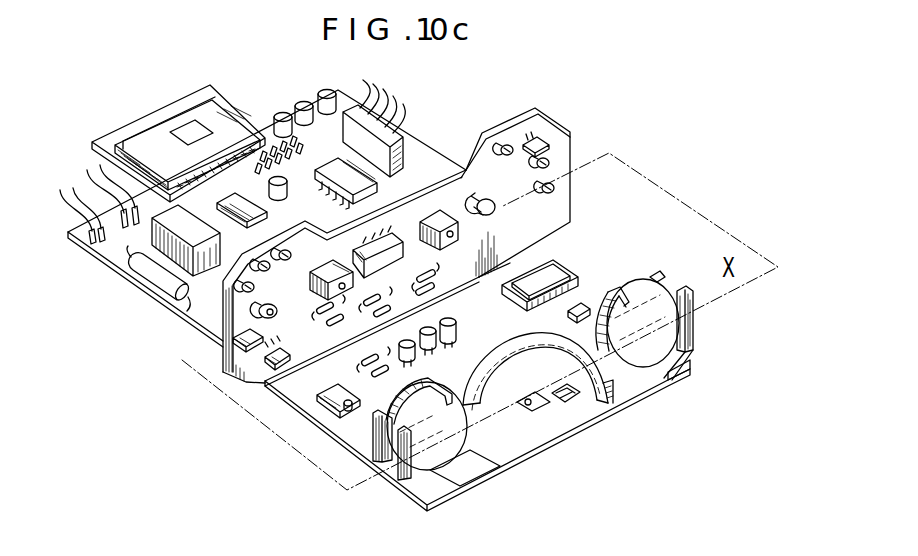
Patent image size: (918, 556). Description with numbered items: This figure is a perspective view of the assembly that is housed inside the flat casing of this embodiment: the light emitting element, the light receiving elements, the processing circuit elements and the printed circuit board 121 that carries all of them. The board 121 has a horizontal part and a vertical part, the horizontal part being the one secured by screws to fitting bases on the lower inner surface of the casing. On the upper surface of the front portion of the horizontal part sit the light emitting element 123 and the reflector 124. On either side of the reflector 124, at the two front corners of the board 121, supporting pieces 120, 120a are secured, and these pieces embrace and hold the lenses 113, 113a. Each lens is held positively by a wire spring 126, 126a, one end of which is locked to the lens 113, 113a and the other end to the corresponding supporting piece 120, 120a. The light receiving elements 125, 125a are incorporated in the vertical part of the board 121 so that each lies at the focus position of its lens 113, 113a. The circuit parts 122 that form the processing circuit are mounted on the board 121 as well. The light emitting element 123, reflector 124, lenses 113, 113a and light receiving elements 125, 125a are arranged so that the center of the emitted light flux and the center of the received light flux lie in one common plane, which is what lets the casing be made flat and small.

The lens 113 is at (418, 462).
The lens 113a is at (666, 332).
The supporting piece 120 is at (446, 493).
The supporting piece 120a is at (645, 382).
The printed circuit board 121 is at (160, 303).
The circuit parts 122 is at (261, 95).
The light emitting element 123 is at (529, 408).
The reflector 124 is at (577, 396).
The light receiving element 125 is at (233, 330).
The light receiving element 125a is at (496, 215).
The wire spring 126 is at (484, 467).
The wire spring 126a is at (610, 292).